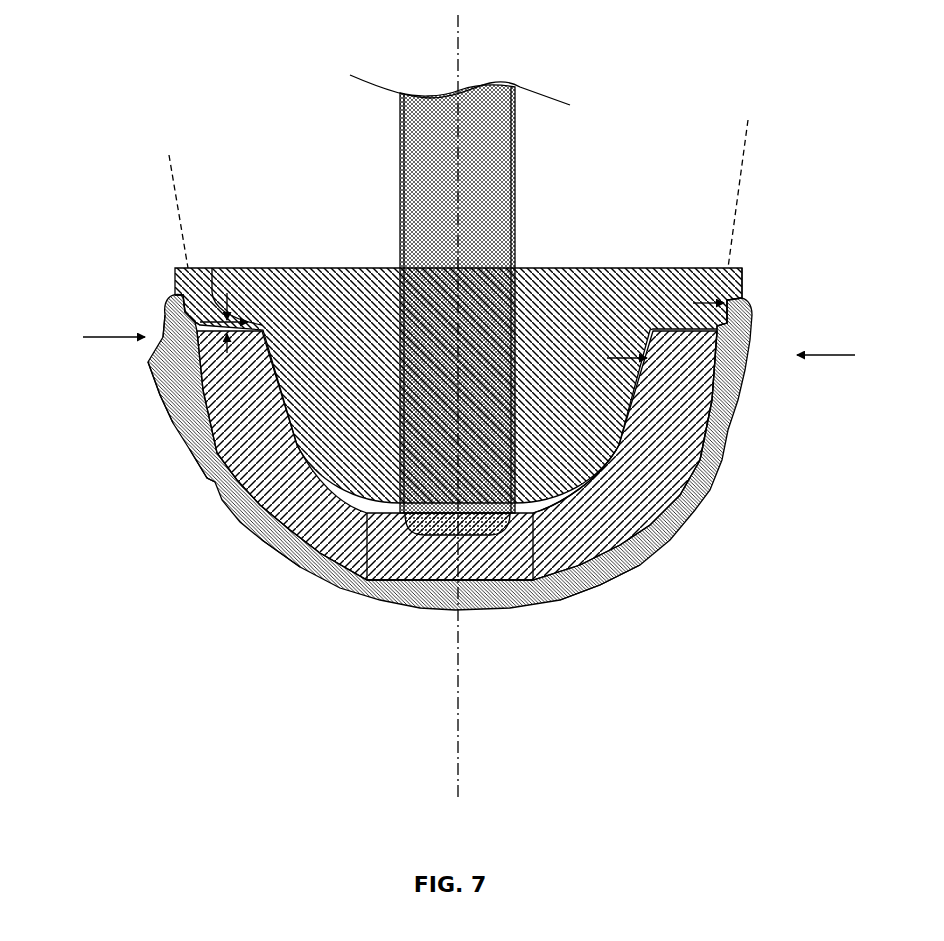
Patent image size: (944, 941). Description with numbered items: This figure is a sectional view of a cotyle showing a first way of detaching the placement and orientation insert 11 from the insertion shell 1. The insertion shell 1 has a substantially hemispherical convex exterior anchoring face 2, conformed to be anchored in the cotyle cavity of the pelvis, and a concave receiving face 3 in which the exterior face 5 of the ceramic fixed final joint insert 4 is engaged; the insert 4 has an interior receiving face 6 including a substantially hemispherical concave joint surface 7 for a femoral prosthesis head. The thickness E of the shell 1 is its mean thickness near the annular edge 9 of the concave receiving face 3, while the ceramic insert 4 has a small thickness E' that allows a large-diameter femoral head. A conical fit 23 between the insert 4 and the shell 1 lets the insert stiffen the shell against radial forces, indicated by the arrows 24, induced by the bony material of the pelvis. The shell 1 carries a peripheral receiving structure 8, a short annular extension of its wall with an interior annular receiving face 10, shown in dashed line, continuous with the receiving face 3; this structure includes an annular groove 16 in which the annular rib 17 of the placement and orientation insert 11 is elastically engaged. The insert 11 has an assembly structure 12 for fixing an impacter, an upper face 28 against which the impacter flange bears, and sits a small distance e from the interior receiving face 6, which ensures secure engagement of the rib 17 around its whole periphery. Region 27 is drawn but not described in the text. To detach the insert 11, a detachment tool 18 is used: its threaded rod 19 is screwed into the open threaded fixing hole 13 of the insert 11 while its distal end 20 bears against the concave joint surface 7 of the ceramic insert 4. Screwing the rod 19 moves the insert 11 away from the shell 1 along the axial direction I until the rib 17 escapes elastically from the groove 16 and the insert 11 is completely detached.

The insertion shell 1 is at (648, 528).
The exterior anchoring face 2 is at (307, 577).
The concave receiving face 3 is at (257, 532).
The ceramic fixed final joint insert 4 is at (605, 578).
The exterior face 5 is at (207, 487).
The interior receiving face 6 is at (250, 268).
The concave joint surface 7 is at (367, 613).
The peripheral receiving structure 8 is at (150, 303).
The annular edge 9 is at (148, 300).
The interior annular receiving face 10 is at (168, 193).
The placement and orientation insert 11 is at (692, 282).
The assembly structure 12 is at (568, 542).
The open threaded fixing hole 13 is at (435, 520).
The annular groove 16 is at (740, 312).
The annular rib 17 is at (212, 268).
The detachment tool 18 is at (518, 158).
The threaded rod 19 is at (437, 362).
The distal end 20 is at (483, 481).
The conical fit 23 is at (712, 405).
The arrows 24 is at (117, 337).
The shell shoulder 27 is at (150, 362).
The upper face 28 is at (577, 266).
The distance e is at (168, 435).
The thickness E is at (753, 303).
The thickness E' is at (702, 370).
The axial direction I is at (469, 407).